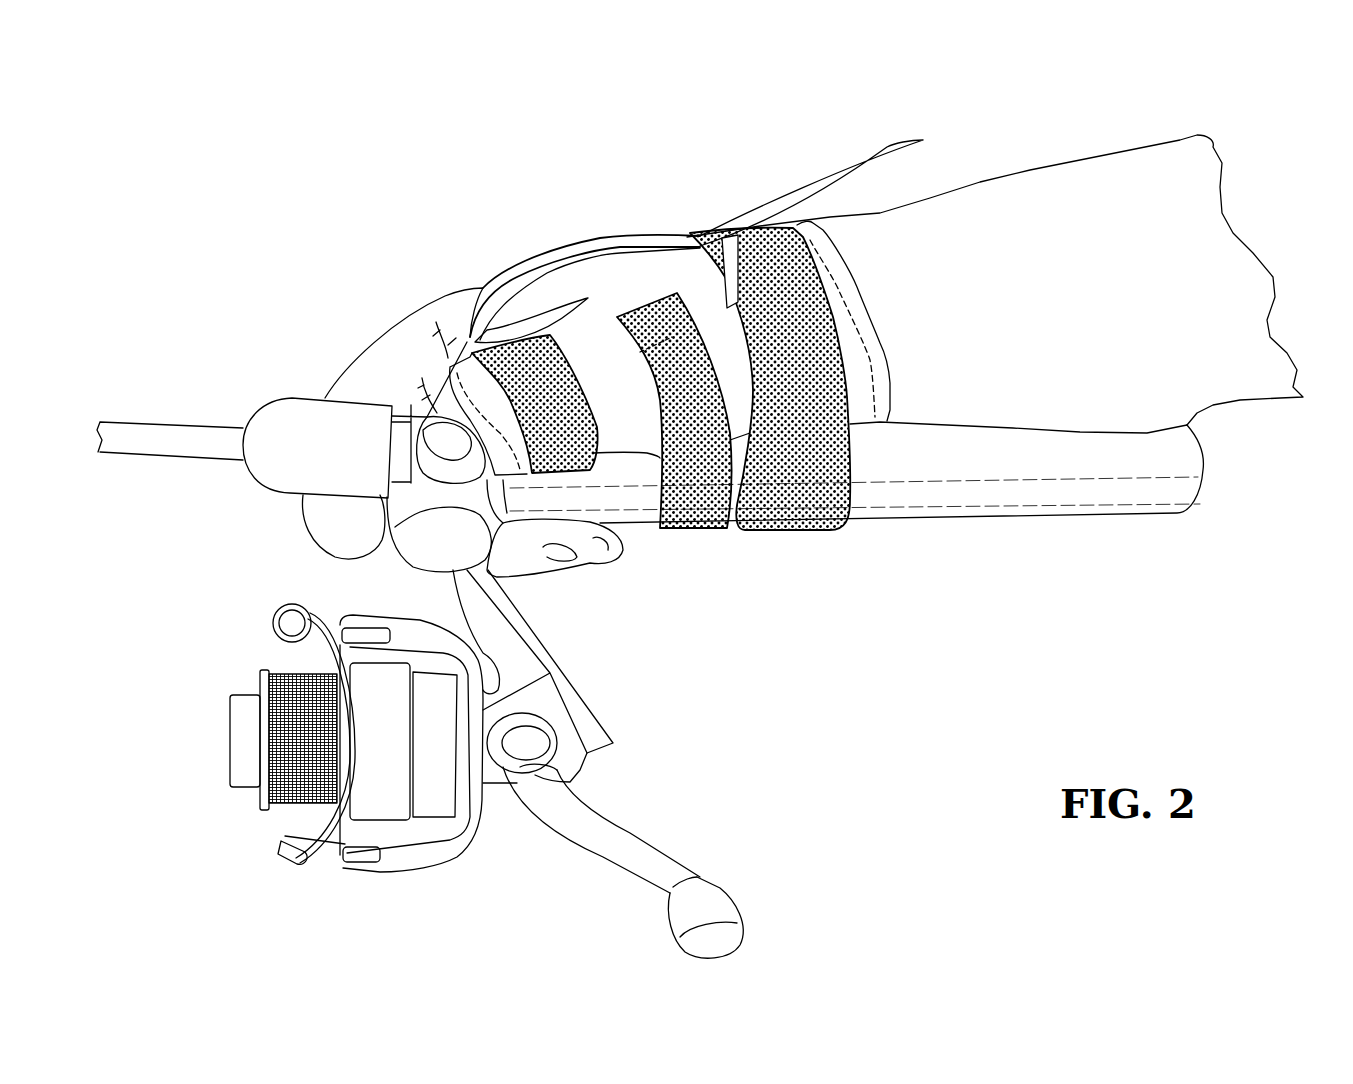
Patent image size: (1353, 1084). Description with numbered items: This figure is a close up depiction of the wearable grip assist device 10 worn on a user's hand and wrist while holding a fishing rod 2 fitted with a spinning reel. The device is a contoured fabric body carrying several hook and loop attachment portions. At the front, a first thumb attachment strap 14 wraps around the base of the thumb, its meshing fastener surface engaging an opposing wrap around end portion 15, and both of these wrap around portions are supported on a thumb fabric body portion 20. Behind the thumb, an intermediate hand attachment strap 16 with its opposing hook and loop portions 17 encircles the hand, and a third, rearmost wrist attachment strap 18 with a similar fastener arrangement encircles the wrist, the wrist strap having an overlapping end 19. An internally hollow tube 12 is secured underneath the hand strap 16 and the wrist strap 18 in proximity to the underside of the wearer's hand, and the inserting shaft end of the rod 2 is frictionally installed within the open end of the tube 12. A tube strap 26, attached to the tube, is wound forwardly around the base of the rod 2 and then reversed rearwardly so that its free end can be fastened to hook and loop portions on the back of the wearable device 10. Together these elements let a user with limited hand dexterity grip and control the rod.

The fishing rod 2 is at (298, 413).
The wearable grip assist device 10 is at (682, 128).
The tube 12 is at (970, 492).
The first thumb attachment strap 14 is at (589, 518).
The wrap around end portion 15 is at (518, 327).
The intermediate hand attachment strap 16 is at (703, 529).
The opposing hook and loop portions 17 is at (562, 338).
The wrist attachment strap 18 is at (823, 532).
The overlapping end 19 is at (728, 240).
The thumb fabric body portion 20 is at (467, 358).
The tube strap 26 is at (833, 187).